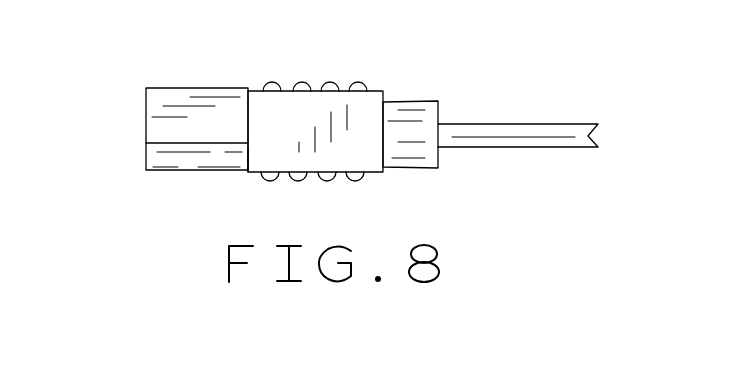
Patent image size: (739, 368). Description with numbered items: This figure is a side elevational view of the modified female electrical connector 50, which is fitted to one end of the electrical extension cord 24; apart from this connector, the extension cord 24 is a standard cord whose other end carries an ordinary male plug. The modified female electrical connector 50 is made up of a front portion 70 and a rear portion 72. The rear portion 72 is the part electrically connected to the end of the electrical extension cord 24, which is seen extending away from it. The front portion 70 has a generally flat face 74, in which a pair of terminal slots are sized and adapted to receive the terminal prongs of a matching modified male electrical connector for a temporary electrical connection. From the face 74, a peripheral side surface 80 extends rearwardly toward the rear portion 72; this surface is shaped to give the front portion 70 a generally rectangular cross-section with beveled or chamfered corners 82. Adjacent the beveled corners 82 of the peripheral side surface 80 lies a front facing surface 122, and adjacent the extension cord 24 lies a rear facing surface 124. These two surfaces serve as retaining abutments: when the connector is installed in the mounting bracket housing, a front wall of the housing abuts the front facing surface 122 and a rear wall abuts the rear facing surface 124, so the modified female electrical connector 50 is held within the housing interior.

The electrical extension cord 24 is at (568, 122).
The modified female electrical connector 50 is at (381, 115).
The front portion 70 is at (150, 132).
The rear portion 72 is at (310, 117).
The face 74 is at (143, 113).
The peripheral side surface 80 is at (163, 129).
The beveled corners 82 is at (191, 160).
The front facing surface 122 is at (248, 160).
The rear facing surface 124 is at (384, 100).